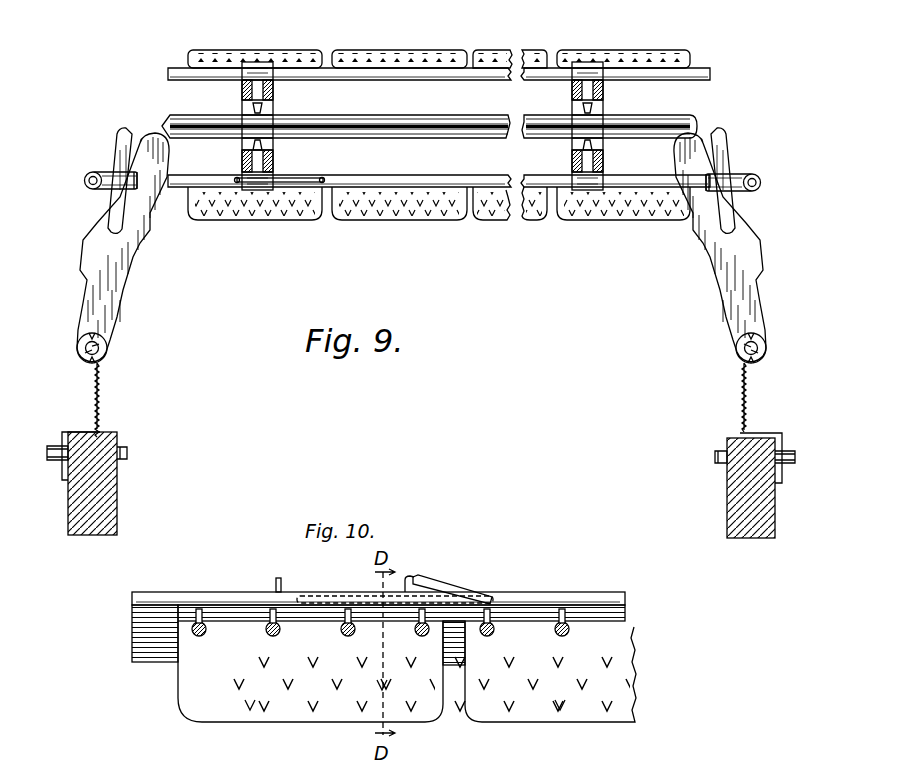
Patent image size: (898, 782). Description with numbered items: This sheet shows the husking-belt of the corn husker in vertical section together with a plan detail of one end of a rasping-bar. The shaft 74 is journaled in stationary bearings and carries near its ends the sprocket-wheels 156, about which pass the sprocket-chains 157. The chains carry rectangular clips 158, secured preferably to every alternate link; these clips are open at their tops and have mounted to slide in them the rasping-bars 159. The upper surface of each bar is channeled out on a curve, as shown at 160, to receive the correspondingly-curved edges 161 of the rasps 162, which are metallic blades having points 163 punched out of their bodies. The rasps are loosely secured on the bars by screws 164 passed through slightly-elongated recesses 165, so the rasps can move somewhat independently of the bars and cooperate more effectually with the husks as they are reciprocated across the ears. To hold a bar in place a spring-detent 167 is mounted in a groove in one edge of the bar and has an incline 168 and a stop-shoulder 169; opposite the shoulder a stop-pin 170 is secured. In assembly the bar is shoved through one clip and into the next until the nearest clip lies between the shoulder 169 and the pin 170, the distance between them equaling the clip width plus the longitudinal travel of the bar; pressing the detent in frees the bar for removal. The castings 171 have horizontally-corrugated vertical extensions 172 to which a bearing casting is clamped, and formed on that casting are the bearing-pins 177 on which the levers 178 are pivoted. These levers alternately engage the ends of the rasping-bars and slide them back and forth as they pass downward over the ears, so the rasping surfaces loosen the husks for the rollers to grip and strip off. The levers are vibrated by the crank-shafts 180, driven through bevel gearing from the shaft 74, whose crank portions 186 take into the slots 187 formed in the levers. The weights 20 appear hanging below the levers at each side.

In FIG. 9, the weight 20 is at (102, 504).
In FIG. 9, the shaft 74 is at (374, 117).
In FIG. 9, the sprocket-wheels 156 is at (268, 108).
In FIG. 9, the sprocket-chains 157 is at (242, 88).
In FIG. 9, the rectangular clips 158 is at (262, 70).
In FIG. 9, the rasping-bars 159 is at (176, 68).
In FIG. 10, the rasping-bars 159 is at (152, 592).
In FIG. 10, the curved channel 160 is at (140, 620).
In FIG. 10, the curved edges 161 is at (232, 612).
In FIG. 9, the rasps 162 is at (232, 50).
In FIG. 10, the rasps 162 is at (188, 698).
In FIG. 10, the points 163 is at (380, 684).
In FIG. 10, the screws 164 is at (206, 632).
In FIG. 10, the elongated recesses 165 is at (200, 608).
In FIG. 9, the spring-detent 167 is at (322, 178).
In FIG. 10, the spring-detent 167 is at (440, 584).
In FIG. 10, the incline 168 is at (468, 594).
In FIG. 10, the stop-shoulder 169 is at (410, 577).
In FIG. 10, the stop-pin 170 is at (280, 578).
In FIG. 9, the castings 171 is at (70, 432).
In FIG. 9, the vertical extensions 172 is at (104, 400).
In FIG. 9, the bearing-pins 177 is at (107, 348).
In FIG. 9, the levers 178 is at (118, 288).
In FIG. 9, the crank-shafts 180 is at (92, 189).
In FIG. 9, the crank portions 186 is at (134, 189).
In FIG. 9, the slots 187 is at (112, 220).